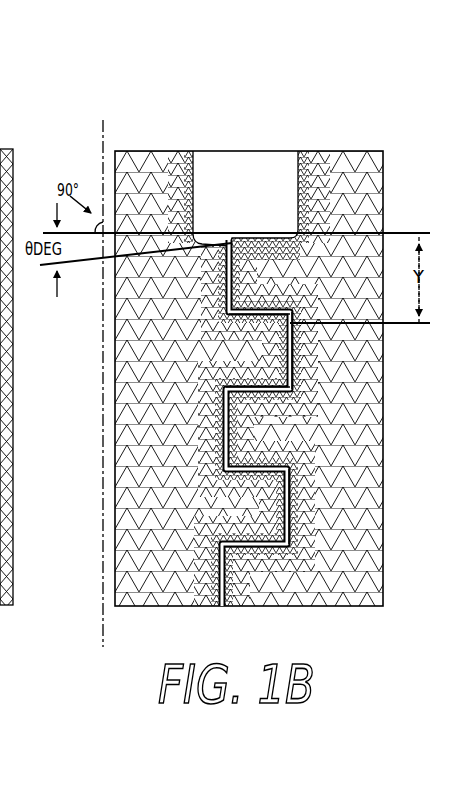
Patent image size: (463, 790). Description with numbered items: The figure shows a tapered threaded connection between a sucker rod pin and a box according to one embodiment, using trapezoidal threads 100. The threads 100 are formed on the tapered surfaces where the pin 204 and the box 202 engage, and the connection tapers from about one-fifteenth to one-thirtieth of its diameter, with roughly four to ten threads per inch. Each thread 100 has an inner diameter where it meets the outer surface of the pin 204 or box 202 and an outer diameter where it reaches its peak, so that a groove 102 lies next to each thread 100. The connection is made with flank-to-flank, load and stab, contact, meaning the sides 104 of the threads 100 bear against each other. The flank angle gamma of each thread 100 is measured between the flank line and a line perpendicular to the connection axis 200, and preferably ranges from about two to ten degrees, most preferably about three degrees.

The threads 100 is at (262, 258).
The groove 102 is at (293, 352).
The sides of the threads 104 is at (243, 312).
The connection axis 200 is at (103, 142).
The box 202 is at (387, 205).
The pin 204 is at (115, 167).